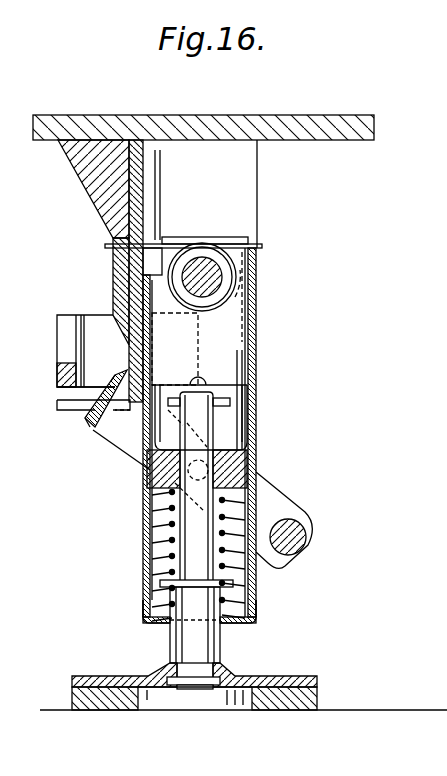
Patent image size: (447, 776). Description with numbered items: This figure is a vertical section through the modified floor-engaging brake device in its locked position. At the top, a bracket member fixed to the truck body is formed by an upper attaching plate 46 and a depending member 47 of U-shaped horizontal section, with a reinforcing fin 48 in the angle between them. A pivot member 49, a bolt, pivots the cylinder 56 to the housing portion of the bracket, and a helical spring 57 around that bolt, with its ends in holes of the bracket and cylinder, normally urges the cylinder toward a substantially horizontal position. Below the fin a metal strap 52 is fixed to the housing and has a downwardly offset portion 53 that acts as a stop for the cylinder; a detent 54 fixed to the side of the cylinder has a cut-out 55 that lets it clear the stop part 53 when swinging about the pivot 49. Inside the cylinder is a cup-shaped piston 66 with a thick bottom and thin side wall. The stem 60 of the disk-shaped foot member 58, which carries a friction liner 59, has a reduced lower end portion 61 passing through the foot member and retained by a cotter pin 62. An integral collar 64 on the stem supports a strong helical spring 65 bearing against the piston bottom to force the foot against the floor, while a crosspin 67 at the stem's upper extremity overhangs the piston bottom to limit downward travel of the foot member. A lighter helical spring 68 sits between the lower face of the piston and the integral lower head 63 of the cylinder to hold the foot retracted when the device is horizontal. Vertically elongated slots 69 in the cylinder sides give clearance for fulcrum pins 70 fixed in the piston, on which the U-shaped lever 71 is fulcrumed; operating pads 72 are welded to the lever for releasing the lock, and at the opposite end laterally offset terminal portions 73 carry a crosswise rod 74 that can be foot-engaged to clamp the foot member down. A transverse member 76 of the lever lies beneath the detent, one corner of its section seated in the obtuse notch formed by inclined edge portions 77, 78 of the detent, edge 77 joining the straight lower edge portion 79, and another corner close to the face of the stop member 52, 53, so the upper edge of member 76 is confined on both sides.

The upper attaching plate 46 is at (304, 130).
The depending member 47 is at (138, 163).
The reinforcing fin 48 is at (100, 198).
The pivot member 49 is at (201, 258).
The metal strap 52 is at (115, 263).
The offset portion 53 is at (137, 362).
The detent 54 is at (57, 374).
The cut-out 55 is at (63, 333).
The cylinder 56 is at (256, 358).
The helical spring 57 is at (235, 246).
The foot member 58 is at (262, 678).
The liner 59 is at (317, 697).
The stem 60 is at (183, 641).
The reduced lower end portion 61 is at (212, 670).
The cotter pin 62 is at (217, 690).
The lower head 63 is at (240, 624).
The collar 64 is at (233, 583).
The helical spring 65 is at (153, 547).
The piston 66 is at (233, 466).
The crosspin 67 is at (228, 400).
The helical spring 68 is at (156, 533).
The slots 69 is at (202, 378).
The fulcrum pins 70 is at (148, 473).
The lever 71 is at (120, 440).
The operating pads 72 is at (68, 411).
The laterally offset terminal portions 73 is at (275, 507).
The rod 74 is at (300, 542).
The transverse member 76 is at (88, 432).
The inclined edge portion 77 is at (103, 382).
The inclined edge portion 78 is at (126, 371).
The straight lower edge portion 79 is at (82, 388).